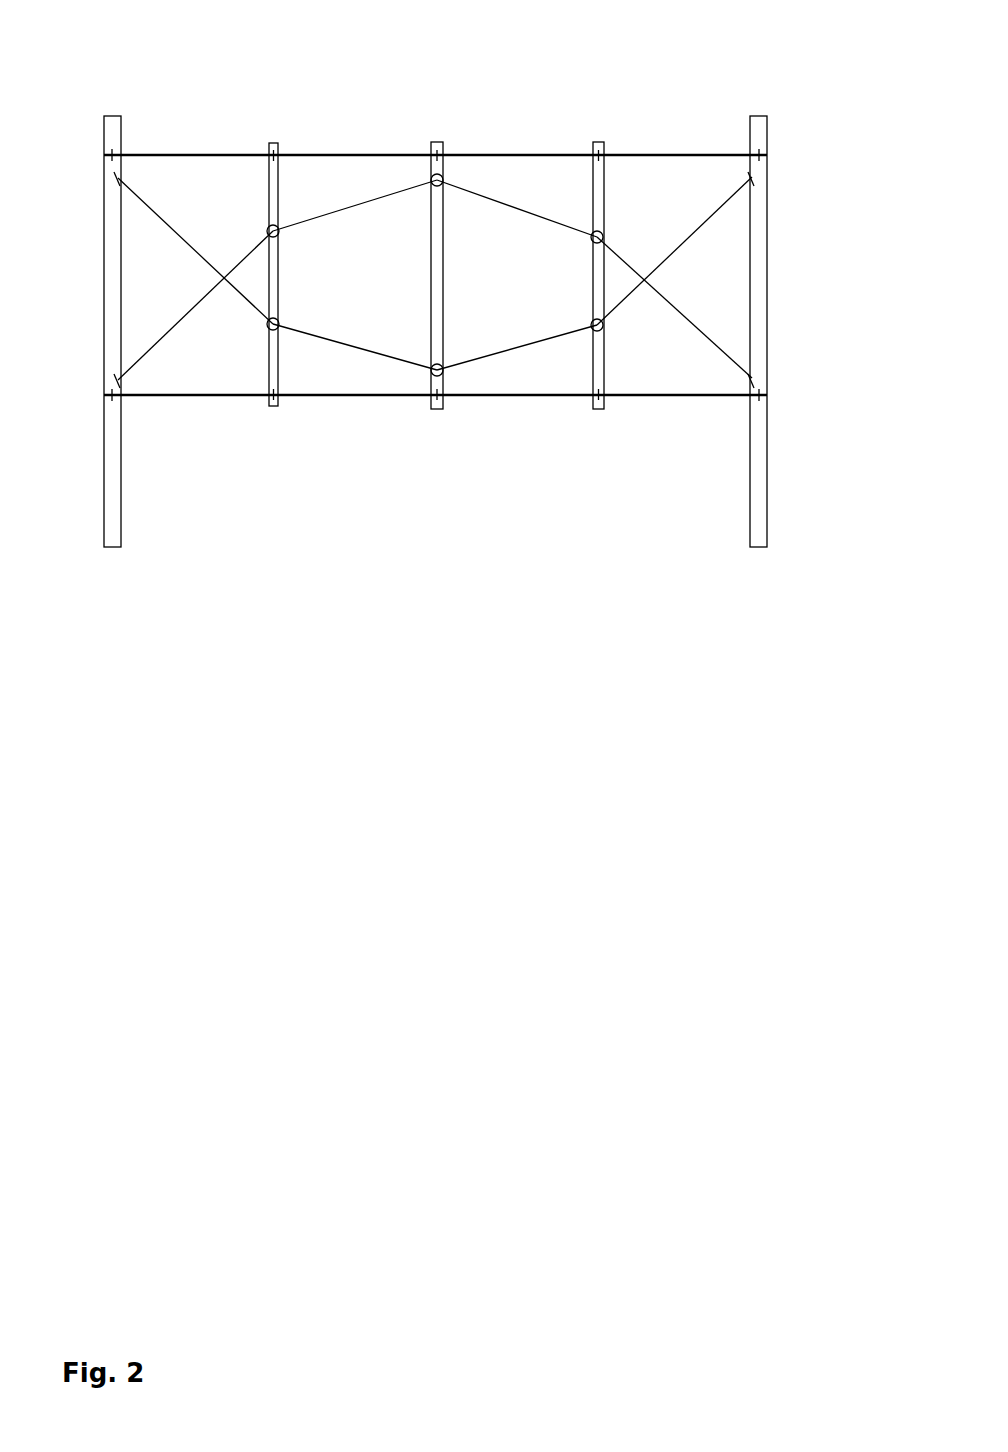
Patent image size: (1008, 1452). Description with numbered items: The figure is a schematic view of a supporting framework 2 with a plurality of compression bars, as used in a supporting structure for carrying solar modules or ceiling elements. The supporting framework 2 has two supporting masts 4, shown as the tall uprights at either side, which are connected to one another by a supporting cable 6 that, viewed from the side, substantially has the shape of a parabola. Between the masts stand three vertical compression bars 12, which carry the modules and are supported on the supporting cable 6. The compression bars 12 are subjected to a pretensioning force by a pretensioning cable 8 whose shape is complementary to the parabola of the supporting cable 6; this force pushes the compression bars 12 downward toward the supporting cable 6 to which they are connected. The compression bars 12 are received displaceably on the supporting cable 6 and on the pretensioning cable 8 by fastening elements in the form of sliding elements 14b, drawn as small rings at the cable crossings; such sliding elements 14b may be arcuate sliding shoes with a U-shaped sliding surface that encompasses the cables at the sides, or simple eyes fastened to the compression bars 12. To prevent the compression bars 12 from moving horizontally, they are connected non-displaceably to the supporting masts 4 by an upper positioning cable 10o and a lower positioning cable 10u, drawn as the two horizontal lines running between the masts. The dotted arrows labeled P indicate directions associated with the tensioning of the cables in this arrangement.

The supporting framework 2 is at (157, 148).
The supporting mast 4 is at (752, 524).
The supporting cable 6 is at (673, 257).
The pretensioning cable 8 is at (374, 190).
The upper positioning cable 10o is at (693, 160).
The lower positioning cable 10u is at (507, 395).
The compression bar 12 is at (592, 145).
The sliding elements 14b is at (268, 227).
The tension direction P is at (262, 327).